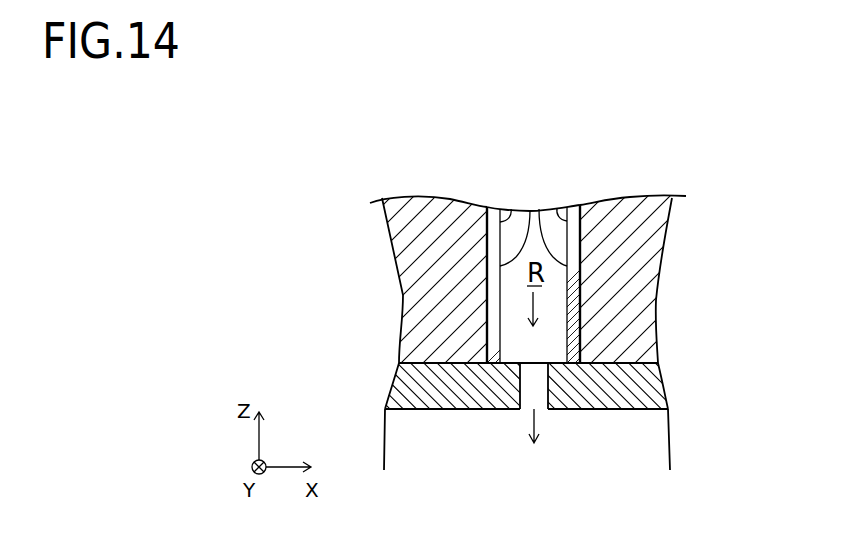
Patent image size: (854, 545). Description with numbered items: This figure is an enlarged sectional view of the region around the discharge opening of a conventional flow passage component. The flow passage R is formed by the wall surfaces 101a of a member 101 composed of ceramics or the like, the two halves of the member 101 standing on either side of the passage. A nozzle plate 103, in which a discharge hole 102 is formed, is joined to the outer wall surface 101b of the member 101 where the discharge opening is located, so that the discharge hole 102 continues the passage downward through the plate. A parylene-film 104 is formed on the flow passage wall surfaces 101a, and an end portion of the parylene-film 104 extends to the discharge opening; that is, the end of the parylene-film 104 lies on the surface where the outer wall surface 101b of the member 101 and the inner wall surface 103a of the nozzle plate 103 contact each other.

The member 101 is at (413, 268).
The wall surface 101a is at (510, 210).
The outer wall surface 101b is at (618, 366).
The discharge hole 102 is at (540, 409).
The nozzle plate 103 is at (657, 386).
The inner wall surface of the nozzle plate 103a is at (642, 357).
The parylene-film 104 is at (539, 209).